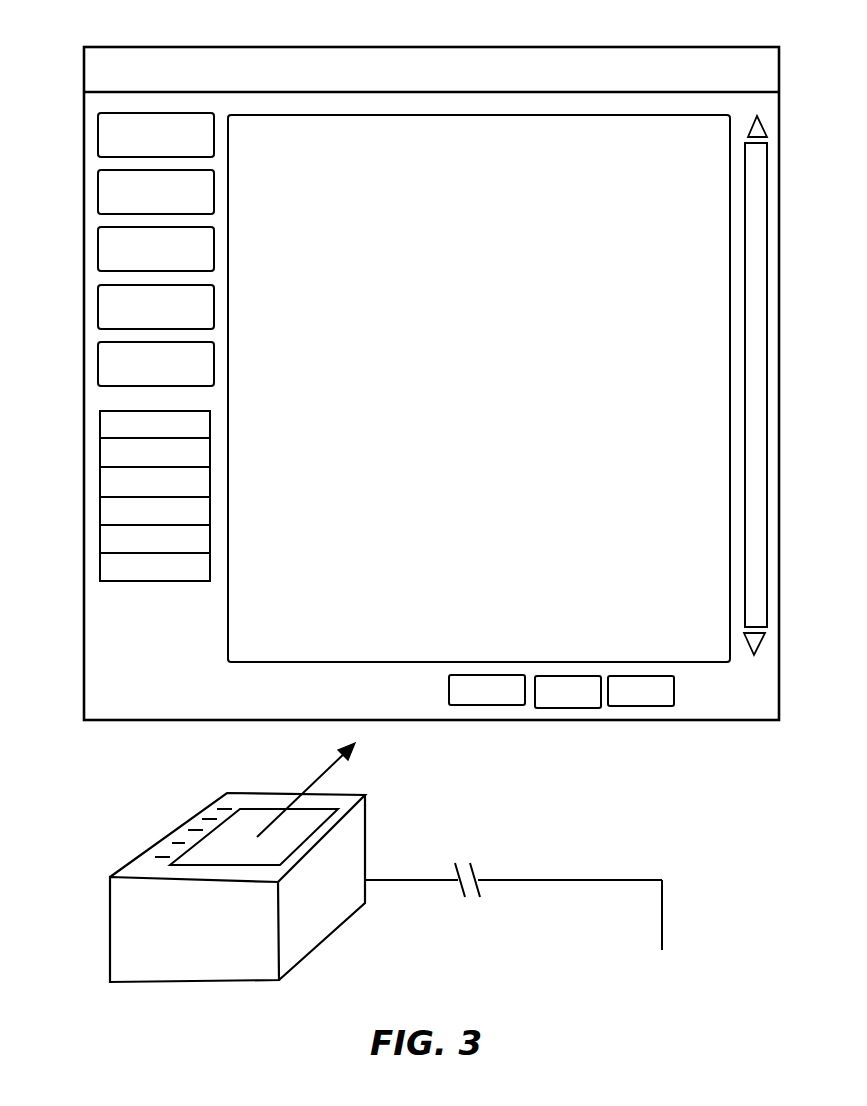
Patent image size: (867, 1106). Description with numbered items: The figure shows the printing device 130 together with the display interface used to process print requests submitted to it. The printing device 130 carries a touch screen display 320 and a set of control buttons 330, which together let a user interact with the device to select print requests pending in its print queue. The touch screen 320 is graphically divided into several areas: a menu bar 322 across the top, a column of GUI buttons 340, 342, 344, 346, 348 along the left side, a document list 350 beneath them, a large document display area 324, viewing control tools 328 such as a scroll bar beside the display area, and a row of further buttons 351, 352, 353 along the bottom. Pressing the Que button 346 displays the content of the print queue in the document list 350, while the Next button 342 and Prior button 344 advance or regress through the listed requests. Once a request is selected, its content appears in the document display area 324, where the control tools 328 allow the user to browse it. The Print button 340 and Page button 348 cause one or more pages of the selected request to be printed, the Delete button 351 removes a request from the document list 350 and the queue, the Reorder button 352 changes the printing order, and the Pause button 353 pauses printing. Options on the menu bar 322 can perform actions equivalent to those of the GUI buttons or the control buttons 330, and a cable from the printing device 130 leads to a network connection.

The touch screen display 320 is at (431, 369).
The menu bar 322 is at (431, 77).
The document display area 324 is at (479, 388).
The viewing control tools 328 is at (758, 282).
The control buttons 330 is at (184, 816).
The Print button 340 is at (98, 133).
The Next button 342 is at (98, 192).
The Prior button 344 is at (98, 250).
The Que button 346 is at (98, 307).
The Page button 348 is at (98, 364).
The document list 350 is at (155, 522).
The Delete button 351 is at (488, 705).
The Reorder button 352 is at (566, 708).
The Pause button 353 is at (640, 706).
The printing device 130 is at (416, 879).